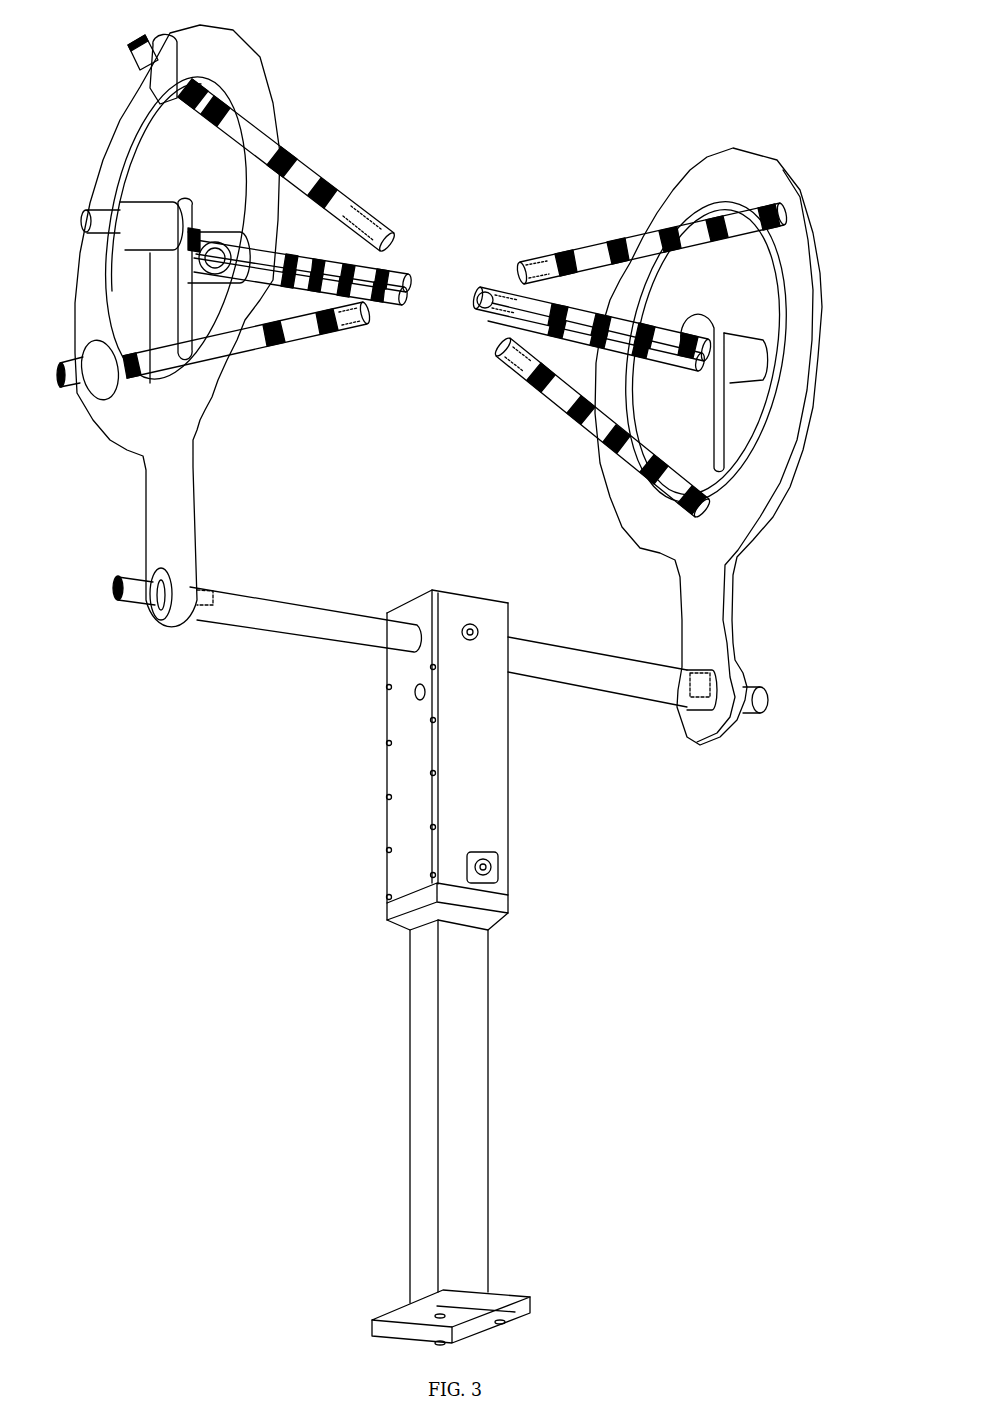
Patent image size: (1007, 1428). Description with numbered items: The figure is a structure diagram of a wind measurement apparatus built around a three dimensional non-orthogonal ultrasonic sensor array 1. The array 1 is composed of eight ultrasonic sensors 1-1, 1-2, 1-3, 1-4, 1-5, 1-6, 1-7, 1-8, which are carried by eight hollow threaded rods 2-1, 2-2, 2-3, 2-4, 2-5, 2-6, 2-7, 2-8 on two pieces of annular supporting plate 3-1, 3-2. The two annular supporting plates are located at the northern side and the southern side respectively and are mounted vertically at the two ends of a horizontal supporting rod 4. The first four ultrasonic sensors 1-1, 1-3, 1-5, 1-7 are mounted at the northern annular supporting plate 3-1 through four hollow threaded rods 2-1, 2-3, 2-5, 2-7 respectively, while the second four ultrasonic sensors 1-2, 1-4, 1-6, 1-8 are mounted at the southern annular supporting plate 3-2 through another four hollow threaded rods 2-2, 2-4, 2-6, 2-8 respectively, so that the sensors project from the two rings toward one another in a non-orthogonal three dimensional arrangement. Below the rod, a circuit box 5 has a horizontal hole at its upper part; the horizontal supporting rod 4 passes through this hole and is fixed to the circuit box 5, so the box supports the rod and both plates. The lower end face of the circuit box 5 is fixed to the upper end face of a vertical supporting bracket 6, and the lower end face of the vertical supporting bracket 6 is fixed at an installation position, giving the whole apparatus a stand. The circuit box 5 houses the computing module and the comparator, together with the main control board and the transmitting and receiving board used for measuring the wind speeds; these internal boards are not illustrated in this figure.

The 3D non-orthogonal ultrasonic sensor array 1 is at (456, 685).
The northern annular supporting plate 3-1 is at (728, 490).
The southern annular supporting plate 3-2 is at (158, 538).
The horizontal supporting rod 4 is at (350, 627).
The circuit box 5 is at (493, 825).
The vertical supporting bracket 6 is at (471, 1091).
The ultrasonic sensor 1-1 is at (652, 243).
The ultrasonic sensor 1-2 is at (249, 342).
The ultrasonic sensor 1-3 is at (582, 321).
The ultrasonic sensor 1-4 is at (301, 274).
The ultrasonic sensor 1-5 is at (592, 427).
The ultrasonic sensor 1-6 is at (294, 166).
The ultrasonic sensor 1-7 is at (597, 345).
The ultrasonic sensor 1-8 is at (303, 266).
The hollow threaded rod 2-1 is at (637, 250).
The hollow threaded rod 2-2 is at (260, 343).
The hollow threaded rod 2-3 is at (607, 313).
The hollow threaded rod 2-4 is at (280, 277).
The hollow threaded rod 2-5 is at (552, 398).
The hollow threaded rod 2-6 is at (297, 172).
The hollow threaded rod 2-7 is at (660, 347).
The hollow threaded rod 2-8 is at (213, 240).